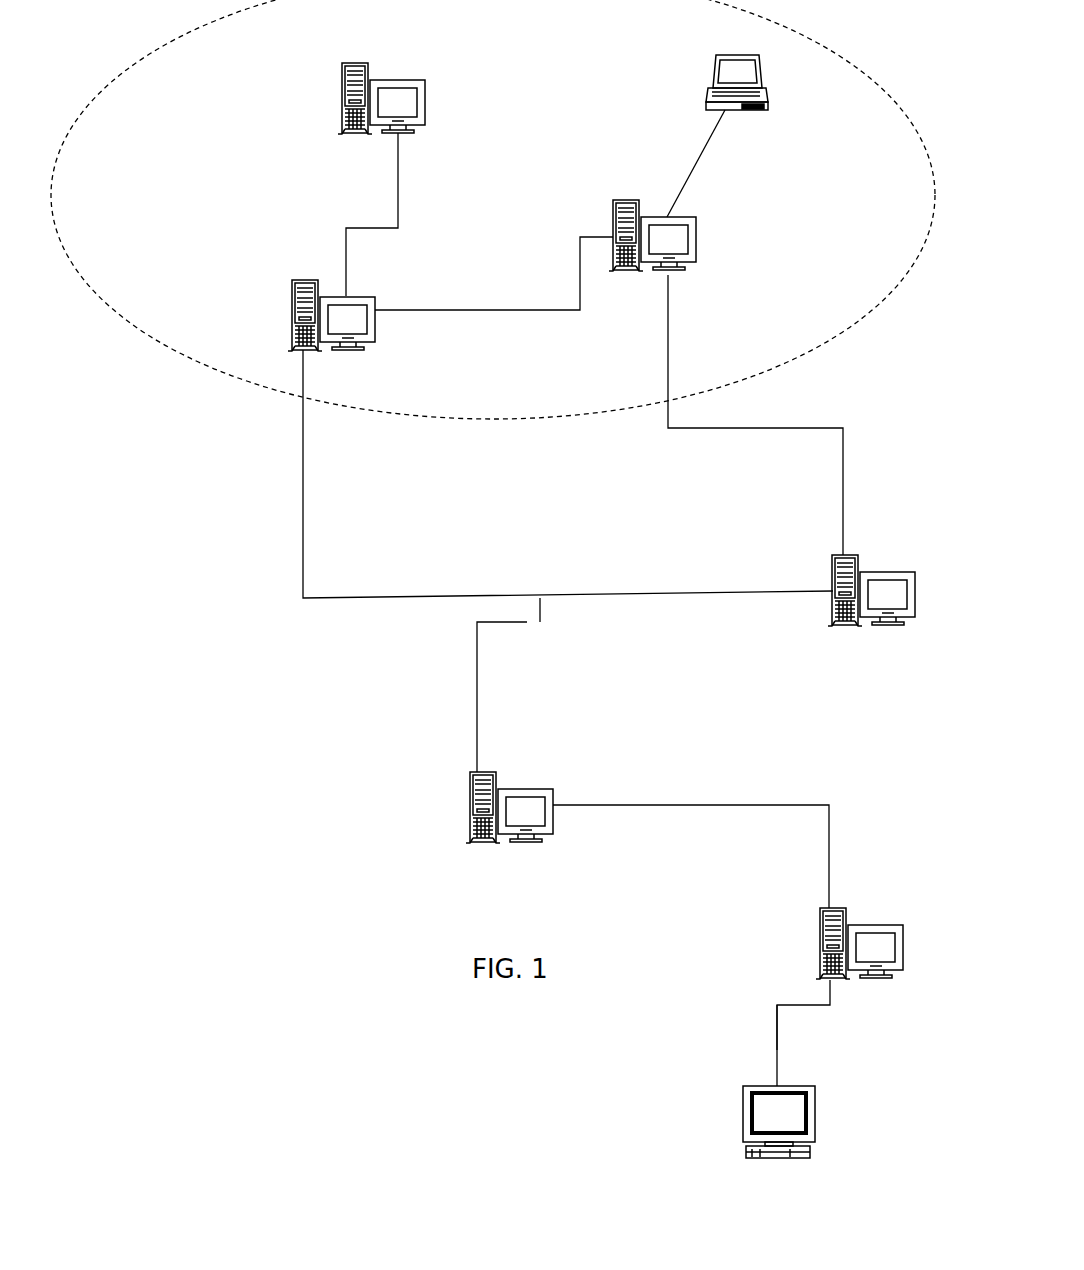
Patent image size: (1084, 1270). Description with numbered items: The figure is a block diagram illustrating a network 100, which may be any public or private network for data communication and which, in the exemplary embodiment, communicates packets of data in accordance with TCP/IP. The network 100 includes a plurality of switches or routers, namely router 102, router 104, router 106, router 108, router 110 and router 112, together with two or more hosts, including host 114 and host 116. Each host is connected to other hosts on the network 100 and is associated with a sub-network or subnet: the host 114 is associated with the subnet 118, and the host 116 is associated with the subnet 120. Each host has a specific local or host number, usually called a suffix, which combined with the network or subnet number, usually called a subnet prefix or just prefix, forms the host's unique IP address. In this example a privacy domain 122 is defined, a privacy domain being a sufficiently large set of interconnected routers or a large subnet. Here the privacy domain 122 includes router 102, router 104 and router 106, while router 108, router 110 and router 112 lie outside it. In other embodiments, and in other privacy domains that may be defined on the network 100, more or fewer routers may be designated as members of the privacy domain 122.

The network 100 is at (310, 732).
The router 102 is at (415, 92).
The router 104 is at (300, 278).
The router 106 is at (695, 235).
The router 108 is at (890, 572).
The router 110 is at (522, 790).
The router 112 is at (900, 925).
The host 114 is at (715, 86).
The host 116 is at (742, 1122).
The subnet 118 is at (702, 163).
The subnet 120 is at (777, 1015).
The privacy domain 122 is at (870, 92).